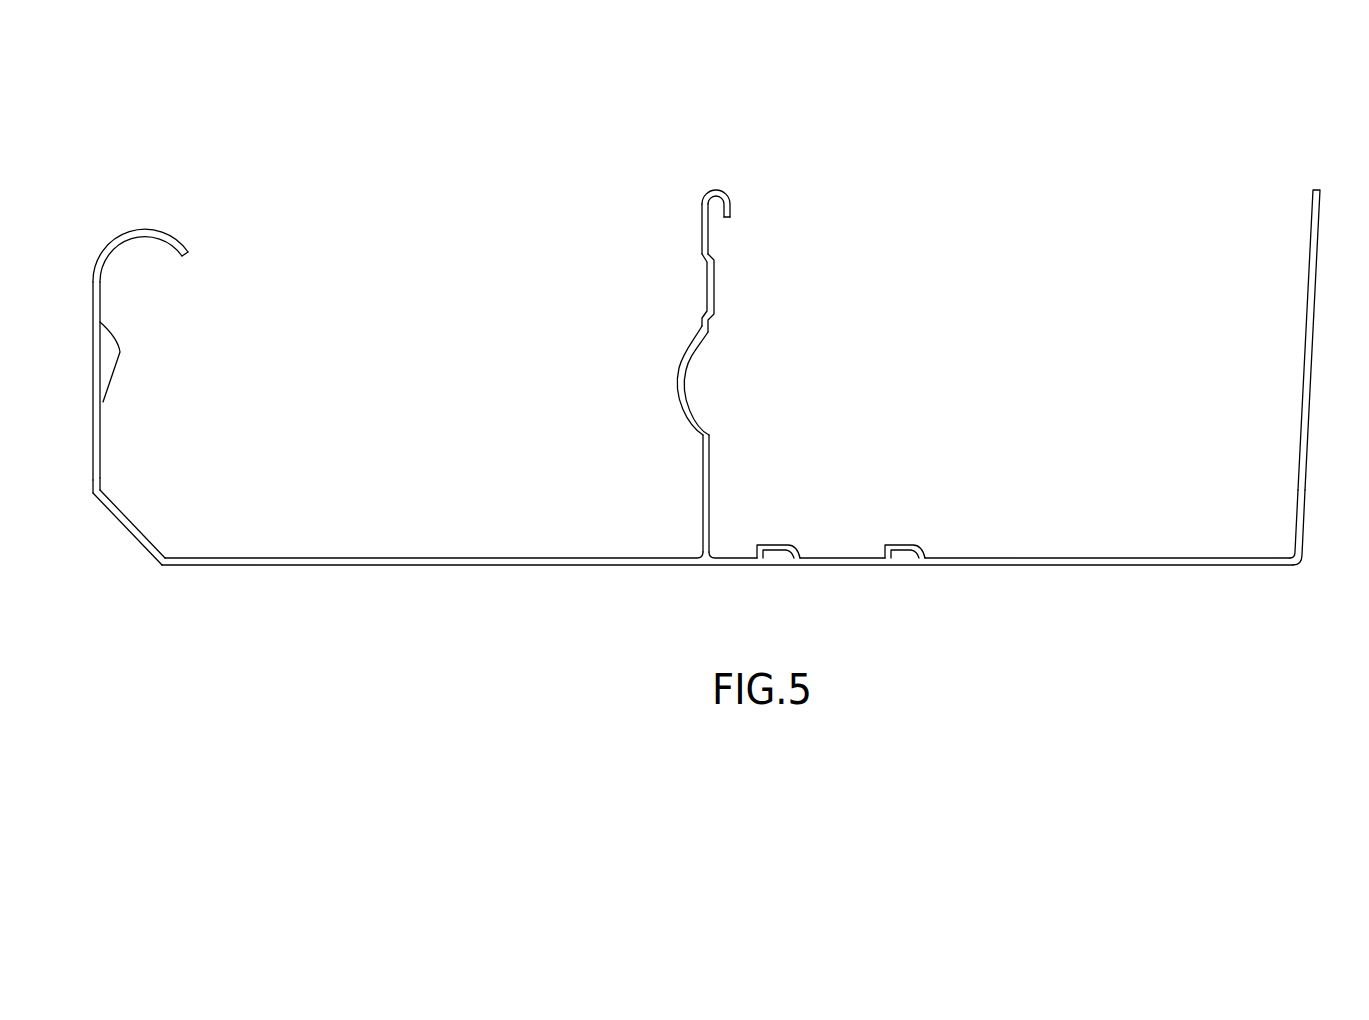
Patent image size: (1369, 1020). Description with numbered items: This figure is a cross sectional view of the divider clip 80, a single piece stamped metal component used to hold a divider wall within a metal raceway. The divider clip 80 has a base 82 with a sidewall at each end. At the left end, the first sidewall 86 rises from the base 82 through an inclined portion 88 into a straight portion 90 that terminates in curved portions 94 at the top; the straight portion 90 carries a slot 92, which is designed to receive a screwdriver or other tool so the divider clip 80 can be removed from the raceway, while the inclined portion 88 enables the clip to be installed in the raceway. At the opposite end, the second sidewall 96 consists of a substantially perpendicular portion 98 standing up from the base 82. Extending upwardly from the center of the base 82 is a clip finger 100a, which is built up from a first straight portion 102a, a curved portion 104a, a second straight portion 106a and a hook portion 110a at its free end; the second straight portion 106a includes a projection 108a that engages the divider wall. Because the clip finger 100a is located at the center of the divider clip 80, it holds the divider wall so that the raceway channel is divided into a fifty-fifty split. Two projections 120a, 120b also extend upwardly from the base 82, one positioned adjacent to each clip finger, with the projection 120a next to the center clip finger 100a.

The divider clip 80 is at (818, 212).
The base 82 is at (245, 558).
The first sidewall 86 is at (90, 473).
The inclined portion 88 is at (122, 533).
The straight portion 90 is at (92, 383).
The slot 92 is at (120, 352).
The curved portions 94 is at (168, 232).
The second sidewall 96 is at (1303, 490).
The substantially perpendicular portion 98 is at (1320, 250).
The clip finger 100a is at (710, 445).
The first straight portion 102a is at (700, 476).
The curved portion 104a is at (682, 368).
The second straight portion 106a is at (702, 243).
The projection 108a is at (717, 290).
The hook portion 110a is at (713, 192).
The projection 120a is at (772, 545).
The projection 120b is at (905, 548).